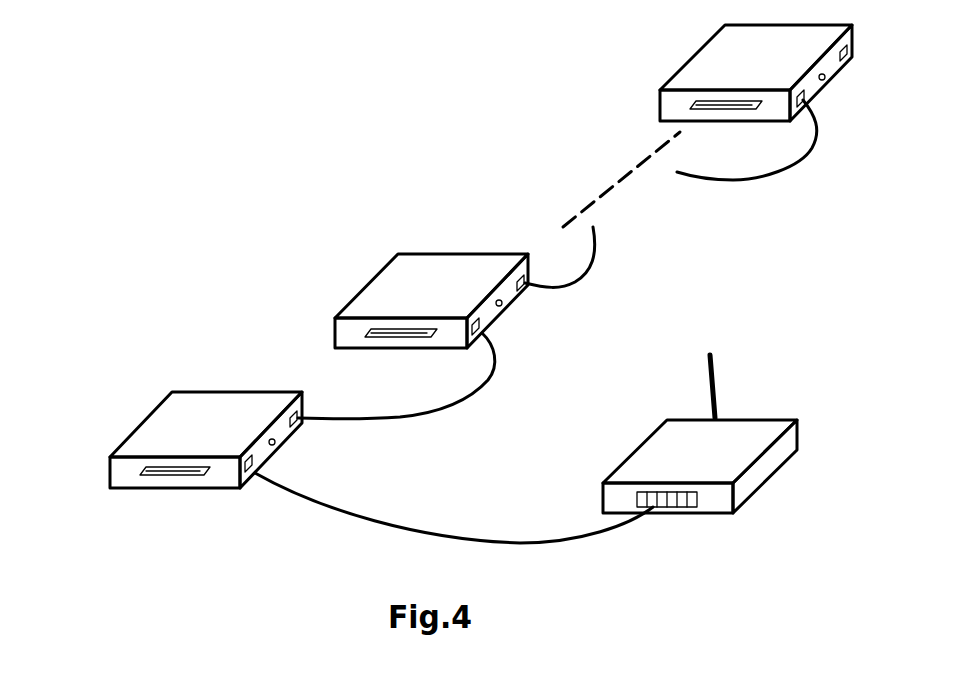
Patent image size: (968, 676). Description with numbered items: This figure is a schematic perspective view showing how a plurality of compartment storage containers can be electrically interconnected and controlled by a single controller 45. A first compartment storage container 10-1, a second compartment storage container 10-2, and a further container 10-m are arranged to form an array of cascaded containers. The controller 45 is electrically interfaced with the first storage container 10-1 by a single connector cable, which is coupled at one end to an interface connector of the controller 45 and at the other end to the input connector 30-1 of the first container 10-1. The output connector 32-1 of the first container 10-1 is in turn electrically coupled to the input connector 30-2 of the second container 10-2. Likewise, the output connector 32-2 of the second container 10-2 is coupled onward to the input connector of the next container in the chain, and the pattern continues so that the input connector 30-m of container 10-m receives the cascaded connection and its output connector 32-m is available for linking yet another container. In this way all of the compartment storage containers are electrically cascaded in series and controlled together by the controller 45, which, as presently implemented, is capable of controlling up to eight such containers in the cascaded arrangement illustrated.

The first compartment storage container 10-1 is at (167, 427).
The second compartment storage container 10-2 is at (400, 287).
The m-th compartment storage container 10-m is at (737, 57).
The input connector 30-1 is at (255, 472).
The input connector 30-2 is at (483, 328).
The input connector 30-m is at (807, 100).
The output connector 32-1 is at (302, 413).
The output connector 32-2 is at (557, 292).
The output connector 32-m is at (853, 57).
The controller 45 is at (745, 447).